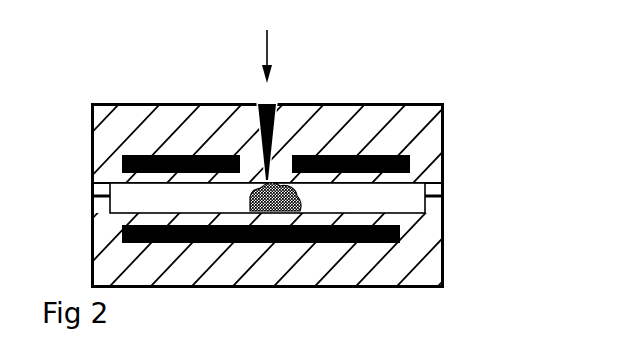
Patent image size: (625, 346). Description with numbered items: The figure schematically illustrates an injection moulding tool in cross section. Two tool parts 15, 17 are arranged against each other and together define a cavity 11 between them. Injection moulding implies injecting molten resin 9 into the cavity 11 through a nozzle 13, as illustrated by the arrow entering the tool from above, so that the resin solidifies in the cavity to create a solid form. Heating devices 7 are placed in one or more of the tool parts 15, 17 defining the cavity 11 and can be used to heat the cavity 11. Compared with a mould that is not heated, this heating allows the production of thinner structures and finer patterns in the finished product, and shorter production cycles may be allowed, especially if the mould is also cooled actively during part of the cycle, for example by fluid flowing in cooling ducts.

The heating device 7 is at (138, 155).
The molten resin 9 is at (248, 192).
The cavity 11 is at (397, 198).
The nozzle 13 is at (283, 126).
The tool part 15 is at (375, 117).
The tool part 17 is at (385, 268).